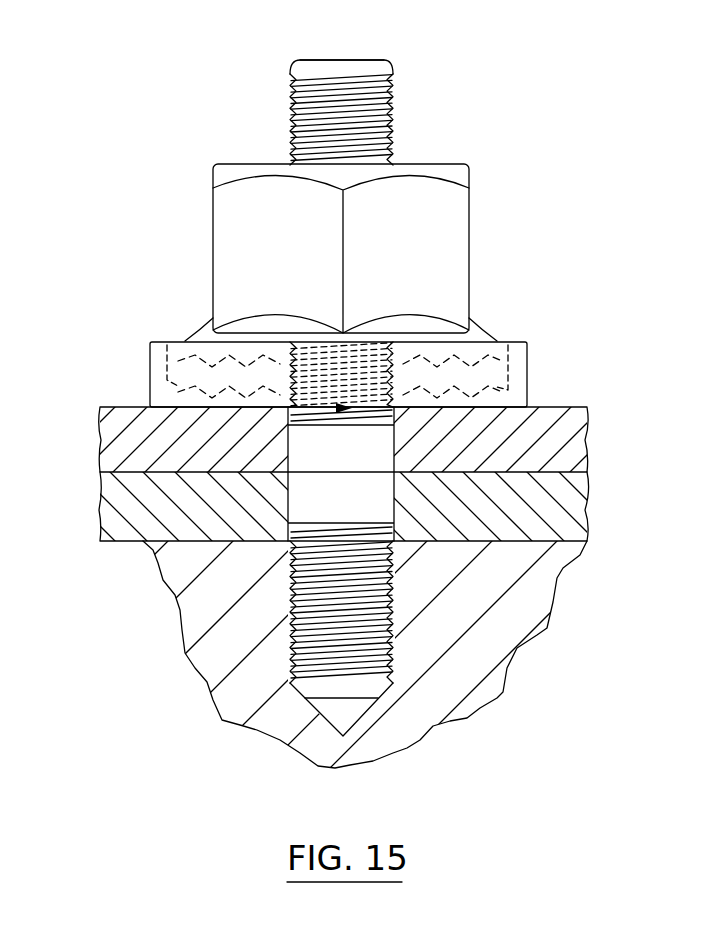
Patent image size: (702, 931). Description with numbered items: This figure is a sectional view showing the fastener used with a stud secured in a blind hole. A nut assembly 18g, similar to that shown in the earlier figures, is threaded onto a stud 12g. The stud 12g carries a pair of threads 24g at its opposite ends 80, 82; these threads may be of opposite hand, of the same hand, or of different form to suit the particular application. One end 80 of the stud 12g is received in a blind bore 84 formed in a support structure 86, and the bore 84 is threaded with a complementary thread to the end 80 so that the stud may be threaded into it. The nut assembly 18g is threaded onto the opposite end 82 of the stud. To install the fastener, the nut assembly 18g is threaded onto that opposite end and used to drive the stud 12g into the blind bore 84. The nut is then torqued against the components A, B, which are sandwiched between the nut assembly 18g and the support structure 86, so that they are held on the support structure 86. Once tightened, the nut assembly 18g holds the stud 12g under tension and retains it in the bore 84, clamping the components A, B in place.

The stud 12g is at (388, 401).
The threads 24g is at (393, 95).
The end of stud 82 is at (352, 65).
The nut assembly 18g is at (495, 239).
The end of stud 80 is at (378, 573).
The component A is at (563, 445).
The component B is at (575, 508).
The blind bore 84 is at (287, 615).
The support structure 86 is at (530, 613).